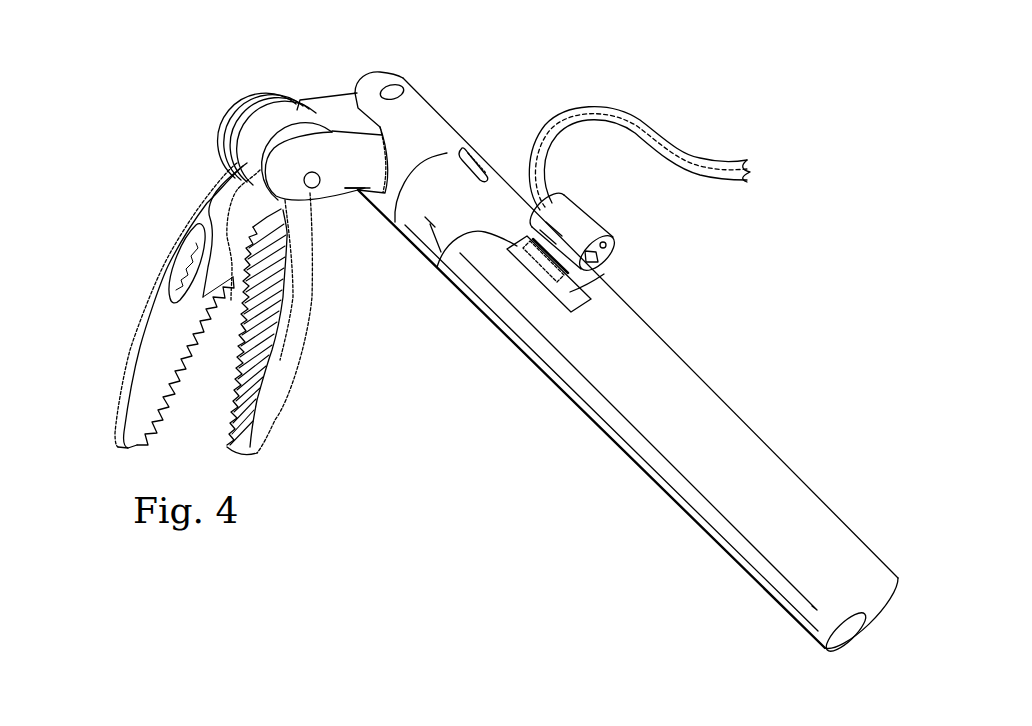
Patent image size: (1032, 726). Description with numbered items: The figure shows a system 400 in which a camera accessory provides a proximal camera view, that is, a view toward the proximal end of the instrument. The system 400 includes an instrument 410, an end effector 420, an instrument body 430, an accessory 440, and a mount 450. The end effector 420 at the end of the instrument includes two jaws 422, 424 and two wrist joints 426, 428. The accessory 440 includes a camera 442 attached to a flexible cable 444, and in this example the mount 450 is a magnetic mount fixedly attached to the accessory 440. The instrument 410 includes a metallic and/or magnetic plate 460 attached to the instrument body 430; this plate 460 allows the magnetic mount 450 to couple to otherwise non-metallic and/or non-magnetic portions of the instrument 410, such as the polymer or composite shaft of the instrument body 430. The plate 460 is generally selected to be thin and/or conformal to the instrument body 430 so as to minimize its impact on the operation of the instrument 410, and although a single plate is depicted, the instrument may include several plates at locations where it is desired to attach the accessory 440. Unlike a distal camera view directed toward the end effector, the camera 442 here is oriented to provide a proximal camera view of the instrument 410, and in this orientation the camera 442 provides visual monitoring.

The system 400 is at (836, 73).
The instrument 410 is at (578, 452).
The end effector 420 is at (140, 253).
The jaw 422 is at (130, 387).
The jaw 424 is at (258, 408).
The wrist joint 426 is at (286, 122).
The wrist joint 428 is at (392, 88).
The instrument body 430 is at (737, 432).
The accessory 440 is at (541, 111).
The camera 442 is at (578, 220).
The flexible cable 444 is at (687, 157).
The mount 450 is at (602, 280).
The plate 460 is at (437, 267).